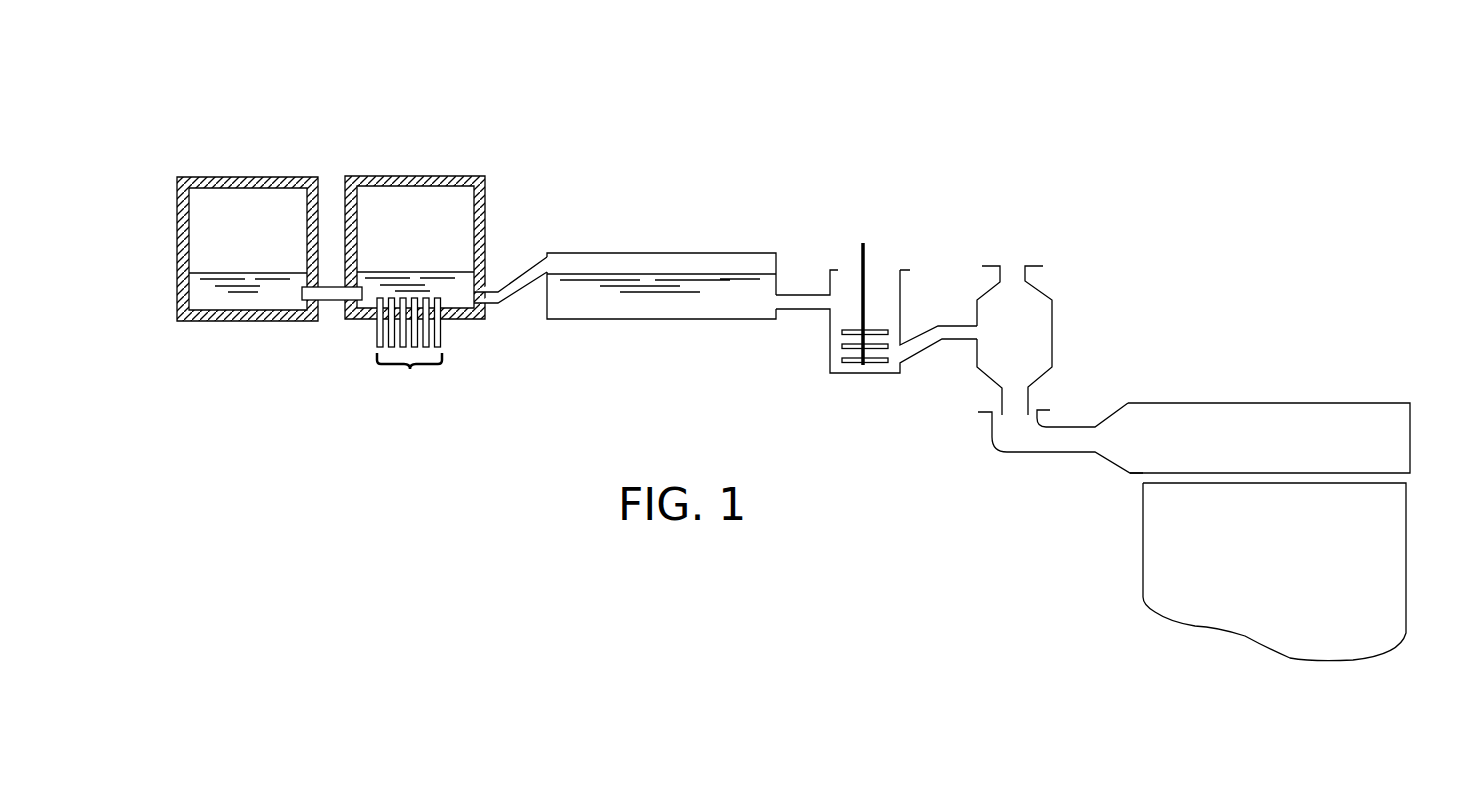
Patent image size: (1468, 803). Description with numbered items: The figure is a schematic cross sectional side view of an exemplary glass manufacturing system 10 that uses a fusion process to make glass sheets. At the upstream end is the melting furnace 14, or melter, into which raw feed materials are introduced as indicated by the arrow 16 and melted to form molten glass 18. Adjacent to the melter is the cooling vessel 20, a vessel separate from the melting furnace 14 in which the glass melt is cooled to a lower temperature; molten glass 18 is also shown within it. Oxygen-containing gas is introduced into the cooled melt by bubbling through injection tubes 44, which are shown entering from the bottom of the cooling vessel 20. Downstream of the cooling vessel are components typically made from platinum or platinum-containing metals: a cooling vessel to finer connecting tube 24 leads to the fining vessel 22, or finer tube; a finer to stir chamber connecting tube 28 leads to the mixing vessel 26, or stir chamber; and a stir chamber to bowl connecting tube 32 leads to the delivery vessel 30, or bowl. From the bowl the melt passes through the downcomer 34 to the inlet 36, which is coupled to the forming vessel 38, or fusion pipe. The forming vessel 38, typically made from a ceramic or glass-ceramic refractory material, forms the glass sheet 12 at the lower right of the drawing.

The glass manufacturing system 10 is at (896, 137).
The glass sheet / ribbon 12 is at (1140, 555).
The melting furnace 14 is at (224, 172).
The arrow 16 is at (213, 228).
The molten glass 18 is at (262, 272).
The cooling vessel 20 is at (442, 172).
The fining vessel 22 is at (752, 253).
The cooling vessel to finer connecting tube 24 is at (513, 297).
The mixing vessel 26 is at (903, 312).
The finer to stir chamber connecting tube 28 is at (806, 295).
The delivery vessel 30 is at (1055, 315).
The stir chamber to bowl connecting tube 32 is at (925, 353).
The downcomer 34 is at (1030, 397).
The inlet 36 is at (1045, 455).
The forming vessel 38 is at (1273, 403).
The injection tubes 44 is at (409, 349).